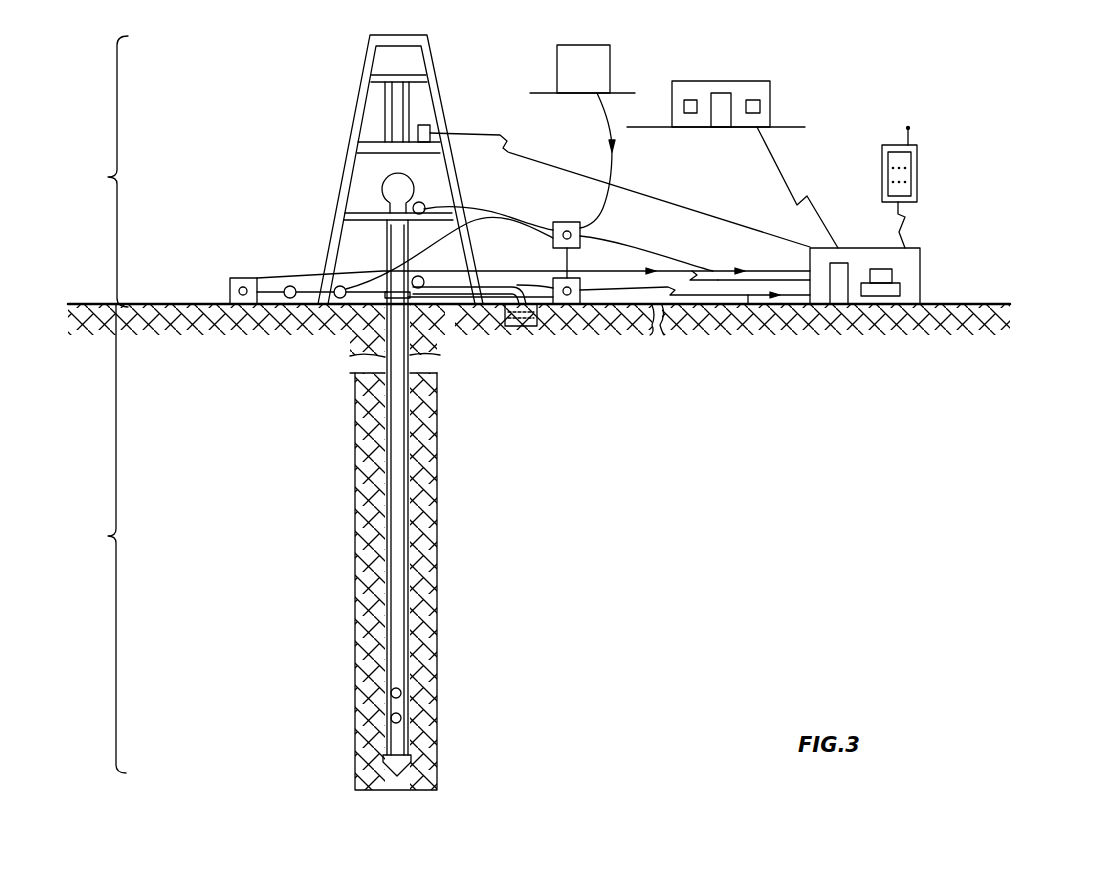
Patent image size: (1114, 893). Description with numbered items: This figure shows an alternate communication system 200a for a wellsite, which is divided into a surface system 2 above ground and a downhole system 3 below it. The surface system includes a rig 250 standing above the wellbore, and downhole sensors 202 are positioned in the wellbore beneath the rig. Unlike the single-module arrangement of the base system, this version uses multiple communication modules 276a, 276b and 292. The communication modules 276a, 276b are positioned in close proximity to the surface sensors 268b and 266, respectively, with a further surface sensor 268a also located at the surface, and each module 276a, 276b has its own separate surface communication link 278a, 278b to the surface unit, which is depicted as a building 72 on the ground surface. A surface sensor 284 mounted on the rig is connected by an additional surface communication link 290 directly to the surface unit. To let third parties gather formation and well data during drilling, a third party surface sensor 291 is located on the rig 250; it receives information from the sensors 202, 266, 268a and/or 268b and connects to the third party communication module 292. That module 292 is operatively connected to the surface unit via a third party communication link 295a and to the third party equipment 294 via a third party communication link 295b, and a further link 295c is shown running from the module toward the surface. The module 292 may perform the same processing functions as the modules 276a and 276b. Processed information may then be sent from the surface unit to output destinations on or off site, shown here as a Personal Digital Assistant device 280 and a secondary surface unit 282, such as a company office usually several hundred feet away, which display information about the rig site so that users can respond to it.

The surface system 2 is at (108, 177).
The downhole system 3 is at (108, 536).
The surface control unit building 72 is at (923, 278).
The alternate communication system 200a is at (992, 92).
The downhole sensors 202 is at (402, 718).
The rig 250 is at (343, 167).
The surface sensor 266 is at (289, 299).
The surface sensor 268a is at (340, 299).
The surface sensor 268b is at (423, 290).
The communication module 276a is at (575, 304).
The communication module 276b is at (235, 278).
The surface communication link 278a is at (748, 305).
The surface communication link 278b is at (718, 280).
The Personal Digital Assistant device 280 is at (918, 178).
The secondary surface unit 282 is at (770, 96).
The surface sensor 284 is at (426, 125).
The surface communication link 290 is at (642, 188).
The third party surface sensor 291 is at (425, 203).
The third party communication module 292 is at (572, 222).
The third party equipment 294 is at (610, 58).
The third party communication link 295a is at (704, 267).
The third party communication link 295b is at (600, 112).
The data link 295c is at (568, 258).